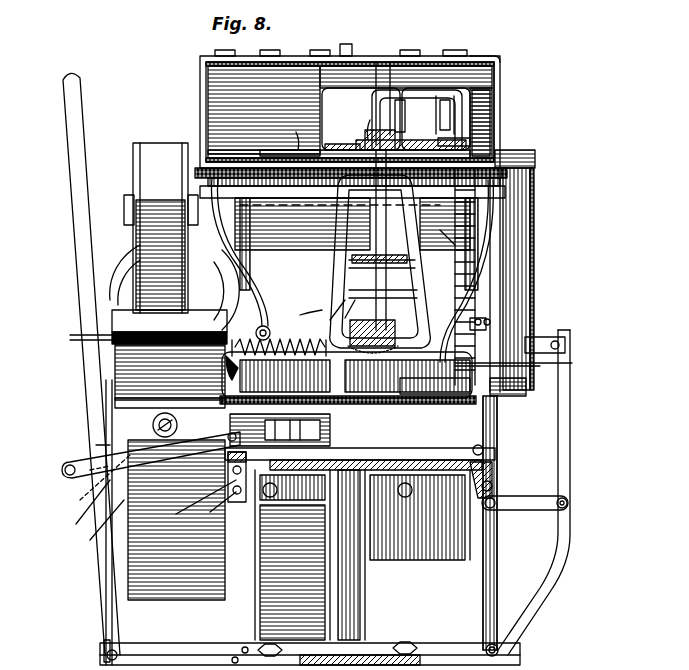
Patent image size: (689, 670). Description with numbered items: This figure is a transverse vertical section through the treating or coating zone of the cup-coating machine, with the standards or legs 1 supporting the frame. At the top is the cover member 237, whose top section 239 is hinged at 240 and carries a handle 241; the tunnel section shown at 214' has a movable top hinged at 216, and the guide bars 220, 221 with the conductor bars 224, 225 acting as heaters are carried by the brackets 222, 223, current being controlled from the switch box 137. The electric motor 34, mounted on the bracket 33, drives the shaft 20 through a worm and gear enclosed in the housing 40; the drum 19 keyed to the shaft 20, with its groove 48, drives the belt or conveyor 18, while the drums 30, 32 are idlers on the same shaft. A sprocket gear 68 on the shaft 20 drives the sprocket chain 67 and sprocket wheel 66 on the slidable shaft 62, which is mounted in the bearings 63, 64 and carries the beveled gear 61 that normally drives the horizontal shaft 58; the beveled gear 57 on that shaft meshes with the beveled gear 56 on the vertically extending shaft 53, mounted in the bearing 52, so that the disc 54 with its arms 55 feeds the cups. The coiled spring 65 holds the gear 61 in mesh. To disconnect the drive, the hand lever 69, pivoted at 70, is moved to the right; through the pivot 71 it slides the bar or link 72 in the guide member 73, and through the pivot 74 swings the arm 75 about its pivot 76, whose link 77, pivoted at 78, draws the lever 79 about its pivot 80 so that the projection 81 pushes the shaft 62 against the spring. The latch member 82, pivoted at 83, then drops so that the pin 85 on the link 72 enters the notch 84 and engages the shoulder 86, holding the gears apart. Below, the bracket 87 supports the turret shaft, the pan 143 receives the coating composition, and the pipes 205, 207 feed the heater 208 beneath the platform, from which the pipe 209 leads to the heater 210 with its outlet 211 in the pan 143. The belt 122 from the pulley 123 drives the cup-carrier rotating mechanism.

The standards or legs 1 is at (214, 600).
The endless belt or conveyor 18 is at (318, 196).
The pulley or drum 19 is at (355, 252).
The shaft 20 is at (205, 178).
The pulley or drum 30 is at (410, 262).
The pulley or drum 32 is at (424, 256).
The bracket 33 is at (110, 320).
The electric motor 34 is at (116, 290).
The housing 40 is at (150, 143).
The groove 48 is at (252, 225).
The bearing 52 is at (398, 300).
The vertically extending shaft 53 is at (376, 120).
The disc 54 is at (350, 130).
The marginal outwardly extending arms 55 is at (296, 130).
The beveled gear 56 is at (462, 314).
The beveled gear 57 is at (347, 375).
The horizontal shaft 58 is at (386, 400).
The beveled gear 61 is at (350, 322).
The slidable shaft 62 is at (482, 326).
The bearing 63 is at (350, 284).
The bearing 64 is at (500, 398).
The coiled spring 65 is at (300, 334).
The sprocket wheel 66 is at (528, 364).
The sprocket chain 67 is at (518, 230).
The sprocket gear 68 is at (535, 152).
The hand lever 69 is at (80, 234).
The pivot 70 is at (106, 655).
The pivot 71 is at (86, 483).
The bar or link 72 is at (408, 448).
The guide member 73 is at (212, 511).
The pivot 74 is at (484, 450).
The swinging arm 75 is at (492, 470).
The pivot 76 is at (493, 486).
The link 77 is at (522, 510).
The pivot 78 is at (570, 500).
The lever 79 is at (572, 450).
The pivot 80 is at (500, 652).
The projection 81 is at (545, 340).
The latch member 82 is at (70, 462).
The pivot 83 is at (226, 470).
The notch 84 is at (186, 504).
The pin 85 is at (94, 529).
The shoulder 86 is at (75, 509).
The bracket 87 is at (338, 550).
The belt 122 is at (184, 423).
The pulley 123 is at (318, 426).
The switch box 137 is at (110, 428).
The pan 143 is at (498, 434).
The horizontally extending pipe 205 is at (291, 310).
The vertically extending pipe 207 is at (284, 225).
The heater 208 is at (232, 160).
The pipe 209 is at (478, 240).
The heater 210 is at (446, 396).
The outlet 211 is at (170, 490).
The tab 214' is at (465, 37).
The hinge 216 is at (492, 90).
The guide bar 220 is at (402, 128).
The guide bar 221 is at (446, 140).
The bracket 222 is at (432, 90).
The bracket 223 is at (497, 64).
The conductor bar 224 is at (392, 80).
The conductor bar 225 is at (452, 118).
The cover member 237 is at (258, 80).
The section 239 is at (226, 56).
The hinge 240 is at (465, 52).
The handle 241 is at (346, 46).